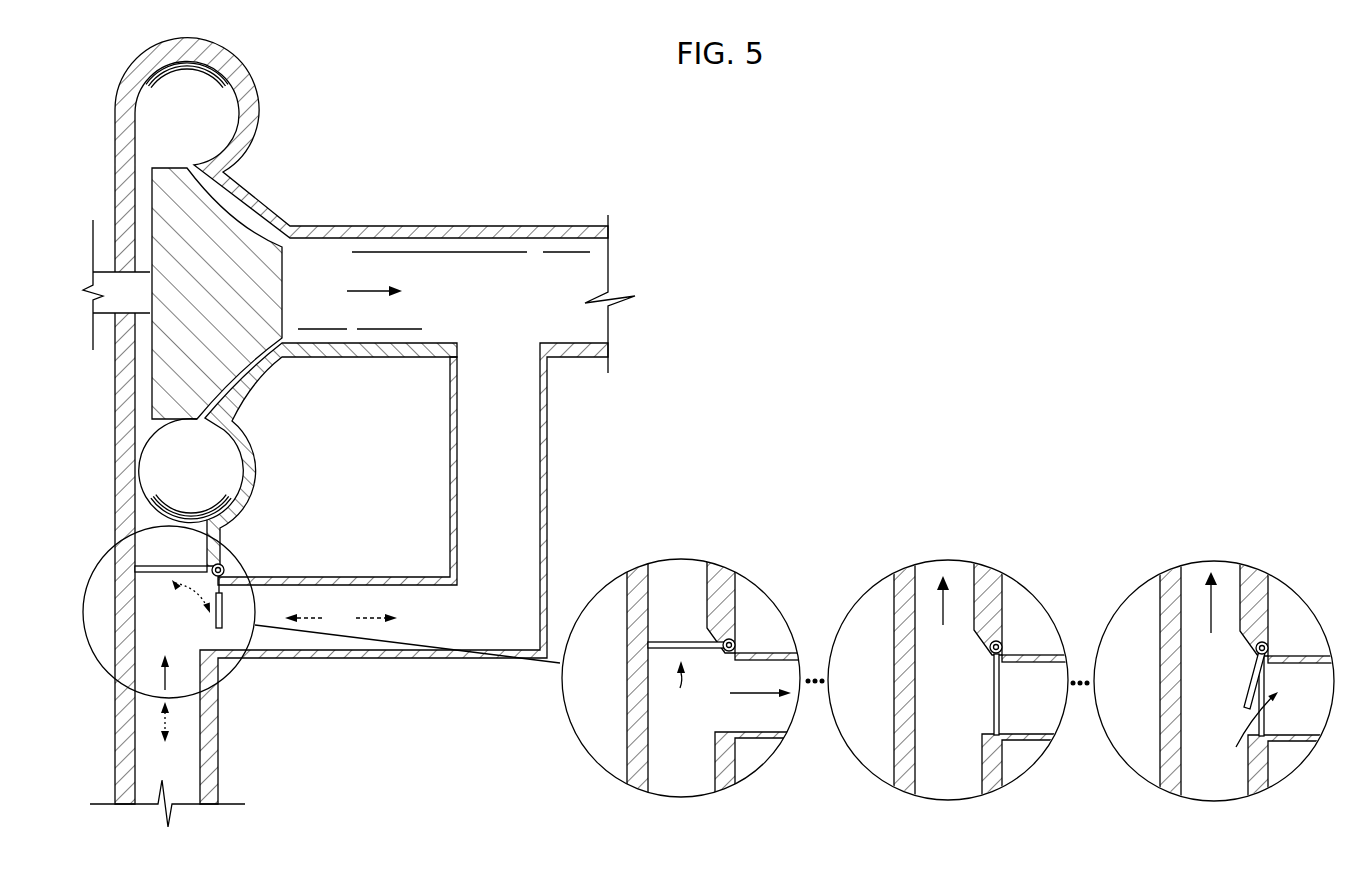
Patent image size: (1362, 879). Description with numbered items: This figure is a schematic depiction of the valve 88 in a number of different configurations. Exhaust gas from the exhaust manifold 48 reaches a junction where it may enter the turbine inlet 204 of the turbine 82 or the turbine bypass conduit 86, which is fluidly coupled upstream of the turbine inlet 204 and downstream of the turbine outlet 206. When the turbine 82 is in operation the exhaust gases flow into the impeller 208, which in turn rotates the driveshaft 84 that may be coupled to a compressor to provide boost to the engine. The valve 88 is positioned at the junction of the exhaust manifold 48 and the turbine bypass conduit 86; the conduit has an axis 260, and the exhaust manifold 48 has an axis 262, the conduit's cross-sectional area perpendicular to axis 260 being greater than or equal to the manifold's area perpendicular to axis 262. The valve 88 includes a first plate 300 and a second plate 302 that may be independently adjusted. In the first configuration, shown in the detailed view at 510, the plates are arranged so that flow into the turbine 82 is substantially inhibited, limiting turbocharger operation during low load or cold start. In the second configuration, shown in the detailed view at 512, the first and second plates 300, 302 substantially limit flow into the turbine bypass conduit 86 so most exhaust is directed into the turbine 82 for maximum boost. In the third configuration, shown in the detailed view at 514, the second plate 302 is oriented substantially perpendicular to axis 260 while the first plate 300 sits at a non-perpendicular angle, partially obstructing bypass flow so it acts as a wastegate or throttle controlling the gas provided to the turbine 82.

The exhaust manifold 48 is at (154, 774).
The turbine 82 is at (277, 204).
The driveshaft 84 is at (116, 303).
The turbine bypass conduit 86 is at (488, 493).
The valve 88 is at (166, 611).
The turbine inlet 204 is at (175, 477).
The turbine outlet 206 is at (285, 262).
The impeller 208 is at (194, 303).
The axis 260 is at (341, 617).
The axis 262 is at (170, 718).
The first plate 300 is at (1228, 679).
The second plate 302 is at (1278, 701).
The detailed view of first configuration 510 is at (688, 543).
The detailed view of second configuration 512 is at (950, 676).
The detailed view of third configuration 514 is at (1216, 676).